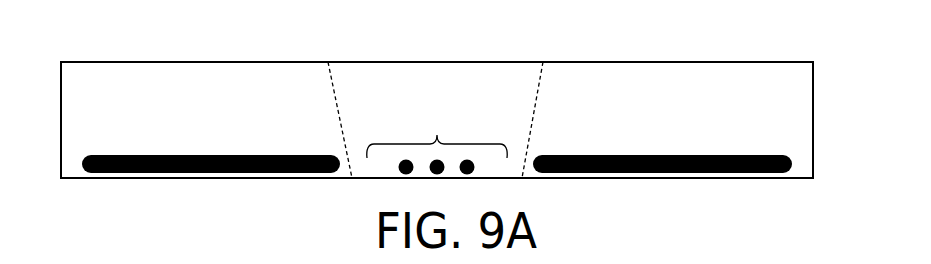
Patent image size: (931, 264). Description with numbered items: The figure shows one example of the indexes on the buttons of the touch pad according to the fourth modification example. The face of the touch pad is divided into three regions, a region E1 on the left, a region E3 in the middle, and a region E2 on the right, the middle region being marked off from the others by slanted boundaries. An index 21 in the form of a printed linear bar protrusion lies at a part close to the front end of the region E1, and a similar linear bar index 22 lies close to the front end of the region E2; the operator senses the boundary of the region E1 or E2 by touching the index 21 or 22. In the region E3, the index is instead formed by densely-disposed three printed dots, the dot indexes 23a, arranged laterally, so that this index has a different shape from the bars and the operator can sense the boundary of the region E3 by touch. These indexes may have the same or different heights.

The index 21 is at (120, 155).
The index 22 is at (753, 155).
The dot indexes 23a is at (437, 135).
The region E1 is at (192, 64).
The region E2 is at (657, 64).
The region E3 is at (438, 64).